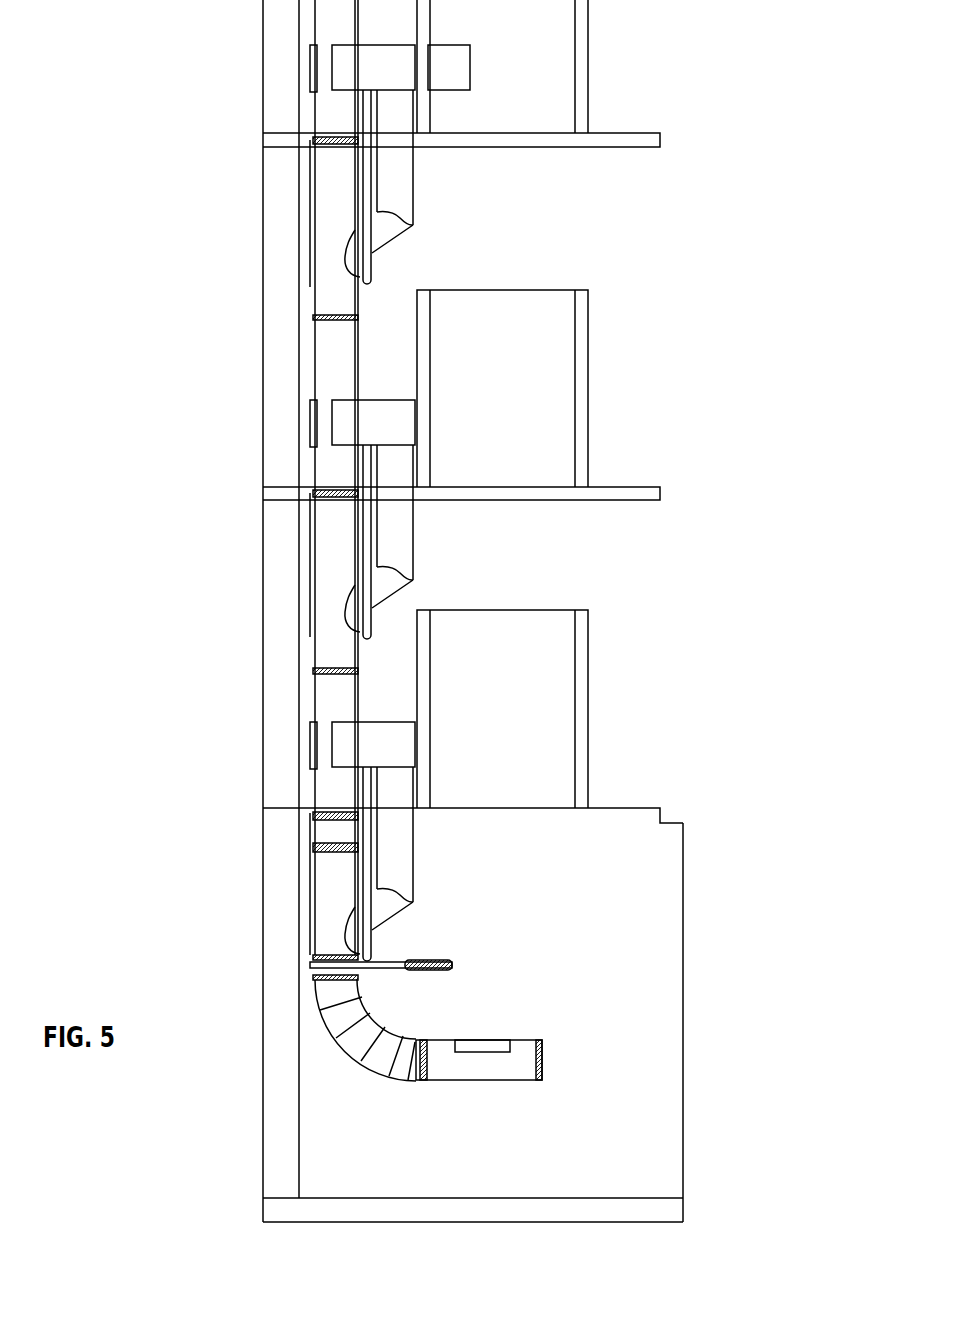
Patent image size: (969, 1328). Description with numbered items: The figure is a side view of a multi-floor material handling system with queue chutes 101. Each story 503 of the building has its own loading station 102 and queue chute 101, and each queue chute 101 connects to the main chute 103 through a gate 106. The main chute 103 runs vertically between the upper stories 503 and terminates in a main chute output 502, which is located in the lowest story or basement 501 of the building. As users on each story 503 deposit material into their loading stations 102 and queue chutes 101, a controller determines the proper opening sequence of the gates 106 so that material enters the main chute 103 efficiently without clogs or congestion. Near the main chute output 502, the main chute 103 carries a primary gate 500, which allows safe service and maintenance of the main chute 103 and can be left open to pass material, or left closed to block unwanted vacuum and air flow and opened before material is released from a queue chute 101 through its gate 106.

The queue chute 101 is at (403, 203).
The loading station 102 is at (385, 78).
The main chute 103 is at (332, 381).
The gate 106 is at (365, 258).
The primary gate 500 is at (418, 965).
The basement 501 is at (602, 1152).
The main chute output 502 is at (532, 1062).
The story 503 is at (542, 68).